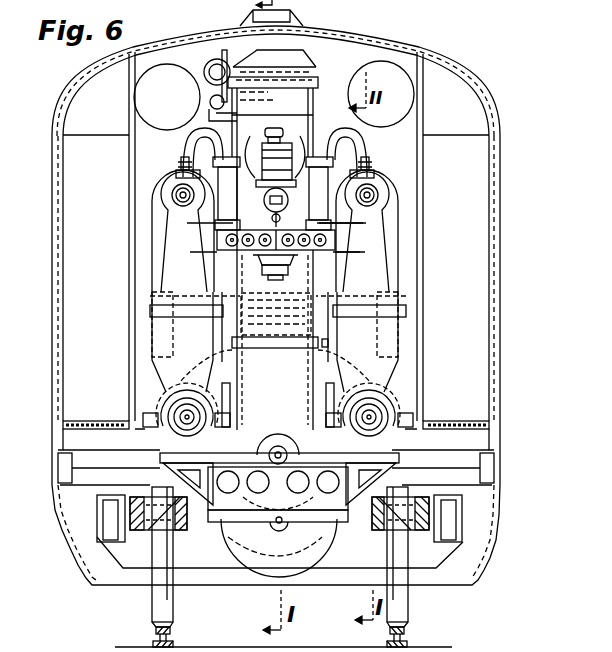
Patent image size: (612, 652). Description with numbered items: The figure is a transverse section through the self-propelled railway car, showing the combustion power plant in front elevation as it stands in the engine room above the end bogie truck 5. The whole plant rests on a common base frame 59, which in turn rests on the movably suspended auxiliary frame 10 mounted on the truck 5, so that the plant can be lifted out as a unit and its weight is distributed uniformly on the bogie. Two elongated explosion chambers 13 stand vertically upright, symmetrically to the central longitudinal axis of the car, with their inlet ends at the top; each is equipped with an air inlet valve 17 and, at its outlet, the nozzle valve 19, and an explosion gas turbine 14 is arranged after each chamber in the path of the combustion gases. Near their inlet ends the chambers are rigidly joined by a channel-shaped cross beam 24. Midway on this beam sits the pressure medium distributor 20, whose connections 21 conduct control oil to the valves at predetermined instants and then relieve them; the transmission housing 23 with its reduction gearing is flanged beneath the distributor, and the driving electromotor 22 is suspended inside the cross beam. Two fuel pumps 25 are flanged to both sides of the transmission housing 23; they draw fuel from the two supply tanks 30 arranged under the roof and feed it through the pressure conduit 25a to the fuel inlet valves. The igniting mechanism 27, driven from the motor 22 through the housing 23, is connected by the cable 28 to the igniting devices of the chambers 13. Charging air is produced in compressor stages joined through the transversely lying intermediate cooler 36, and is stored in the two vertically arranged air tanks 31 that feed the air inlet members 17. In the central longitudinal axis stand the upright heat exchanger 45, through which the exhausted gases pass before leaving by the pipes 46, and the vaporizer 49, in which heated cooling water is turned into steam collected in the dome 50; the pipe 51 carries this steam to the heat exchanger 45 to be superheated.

The end bogie frame or truck 5 is at (157, 517).
The second auxiliary frame 10 is at (340, 507).
The explosion chamber 13 is at (178, 336).
The explosion gas turbine 14 is at (163, 443).
The air inlet valve 17 is at (176, 187).
The nozzle valve 19 is at (391, 398).
The pressure medium distributor 20 is at (276, 157).
The connections 21 is at (275, 149).
The electromotor 22 is at (280, 340).
The transmission housing 23 is at (222, 233).
The cross beam 24 is at (272, 259).
The fuel pump 25 is at (274, 193).
The pressure conduit 25a is at (187, 139).
The igniting mechanism 27 is at (292, 257).
The cable 28 is at (290, 194).
The supply tank 30 is at (274, 95).
The air tank 31 is at (158, 230).
The intermediate cooler 36 is at (322, 303).
The heat exchanger 45 is at (297, 103).
The pipe 46 is at (283, 60).
The vaporizer 49 is at (318, 80).
The dome 50 is at (302, 63).
The pipe 51 is at (207, 62).
The base frame 59 is at (247, 505).